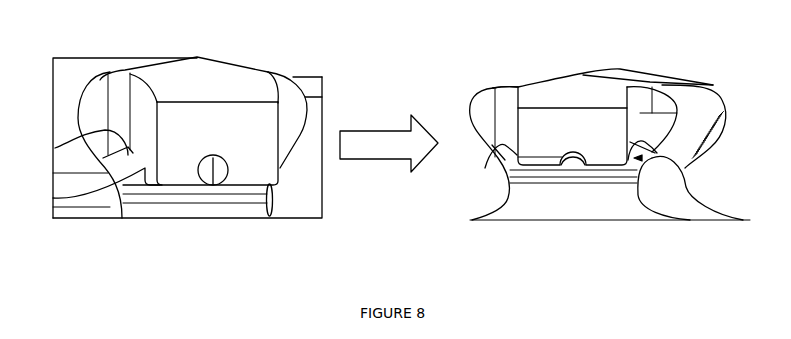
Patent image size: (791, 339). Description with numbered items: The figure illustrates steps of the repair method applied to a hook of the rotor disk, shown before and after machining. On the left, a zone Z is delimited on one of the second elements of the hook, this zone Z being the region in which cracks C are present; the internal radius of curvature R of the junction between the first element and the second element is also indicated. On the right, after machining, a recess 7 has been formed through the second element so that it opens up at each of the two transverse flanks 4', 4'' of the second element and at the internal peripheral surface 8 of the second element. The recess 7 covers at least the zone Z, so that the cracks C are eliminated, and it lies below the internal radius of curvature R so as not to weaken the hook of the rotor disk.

The internal radius of curvature R is at (55, 148).
The cracks C is at (190, 178).
The zone Z is at (213, 186).
The transverse flank 4' is at (487, 163).
The transverse flank 4'' is at (677, 160).
The inner peripheral surface 8 is at (538, 183).
The recess 7 is at (571, 160).